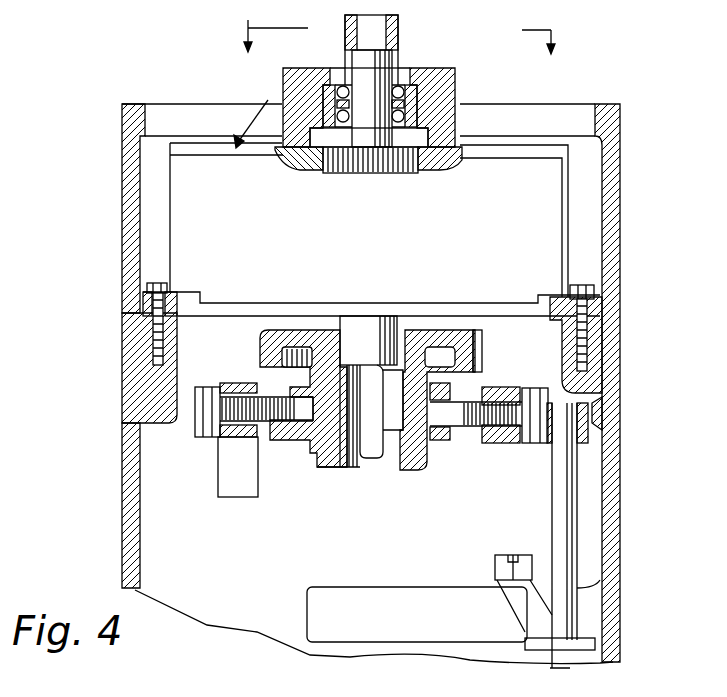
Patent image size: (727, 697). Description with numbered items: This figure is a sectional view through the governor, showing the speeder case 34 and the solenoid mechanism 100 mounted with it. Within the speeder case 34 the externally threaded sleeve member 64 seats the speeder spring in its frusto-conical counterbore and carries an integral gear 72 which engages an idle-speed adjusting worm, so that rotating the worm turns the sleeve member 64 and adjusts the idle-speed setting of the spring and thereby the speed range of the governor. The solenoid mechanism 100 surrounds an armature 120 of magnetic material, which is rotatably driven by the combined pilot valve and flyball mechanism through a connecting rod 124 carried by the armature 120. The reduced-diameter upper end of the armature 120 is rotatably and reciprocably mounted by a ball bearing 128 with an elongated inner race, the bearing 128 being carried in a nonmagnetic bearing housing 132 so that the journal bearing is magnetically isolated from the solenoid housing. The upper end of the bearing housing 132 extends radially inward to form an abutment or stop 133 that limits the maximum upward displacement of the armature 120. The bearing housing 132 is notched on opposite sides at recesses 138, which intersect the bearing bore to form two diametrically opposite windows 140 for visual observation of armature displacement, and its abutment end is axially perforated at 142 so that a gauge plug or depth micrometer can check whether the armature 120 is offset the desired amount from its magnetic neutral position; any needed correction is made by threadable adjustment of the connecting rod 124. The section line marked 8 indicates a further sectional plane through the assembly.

The section line 8- 8 is at (394, 39).
The speeder case 34 is at (130, 286).
The externally threaded sleeve member 64 is at (413, 468).
The gear 72 is at (477, 343).
The solenoid mechanism 100 is at (255, 112).
The armature 120 is at (375, 152).
The connecting rod 124 is at (377, 460).
The bearing 128 is at (418, 108).
The nonmagnetic bearing housing 132 is at (412, 67).
The abutment or stop 133 is at (394, 56).
The recesses or notches 138 is at (312, 68).
The windows 140 is at (362, 44).
The axial perforation 142 is at (361, 96).